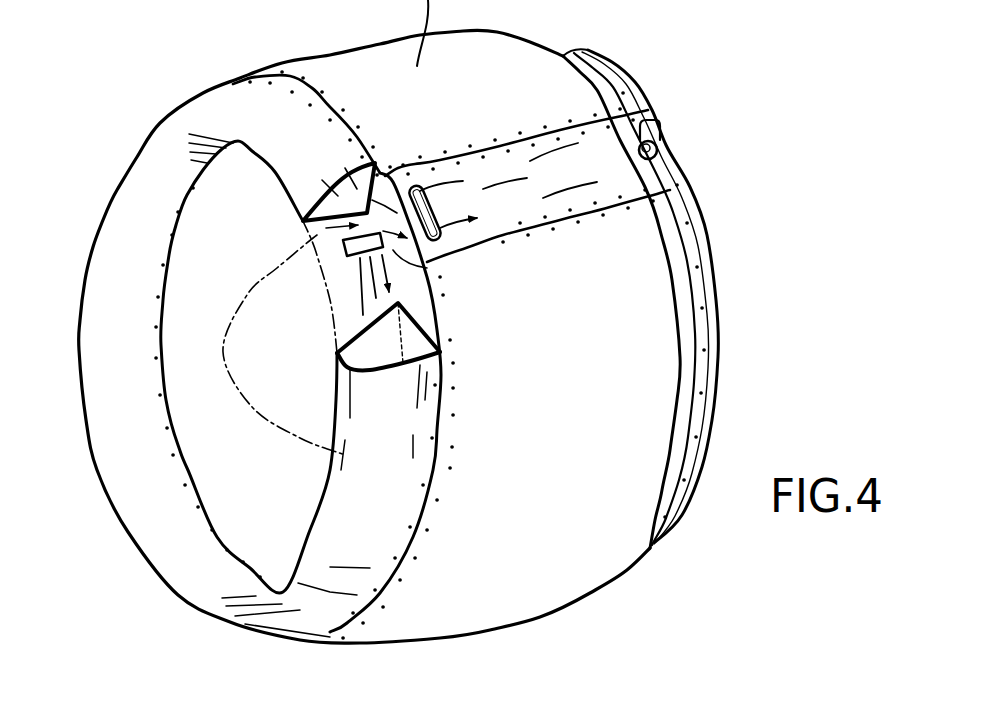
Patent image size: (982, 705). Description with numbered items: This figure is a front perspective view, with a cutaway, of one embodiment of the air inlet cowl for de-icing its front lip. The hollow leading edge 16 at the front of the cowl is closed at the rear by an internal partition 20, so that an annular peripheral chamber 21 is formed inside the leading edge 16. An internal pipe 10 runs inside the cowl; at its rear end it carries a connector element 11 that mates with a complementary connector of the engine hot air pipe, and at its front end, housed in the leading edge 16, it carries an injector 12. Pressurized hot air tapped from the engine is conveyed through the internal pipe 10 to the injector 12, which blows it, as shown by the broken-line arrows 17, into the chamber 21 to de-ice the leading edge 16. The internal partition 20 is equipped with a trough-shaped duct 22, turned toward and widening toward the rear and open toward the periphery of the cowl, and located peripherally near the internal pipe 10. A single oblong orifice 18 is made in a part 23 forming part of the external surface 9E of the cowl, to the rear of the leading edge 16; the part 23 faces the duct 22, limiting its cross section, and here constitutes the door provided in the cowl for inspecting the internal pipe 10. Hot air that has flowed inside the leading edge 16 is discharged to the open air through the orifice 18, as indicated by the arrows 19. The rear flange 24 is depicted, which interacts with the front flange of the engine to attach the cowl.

The external surface 9E is at (285, 60).
The hollow leading edge 16 is at (111, 213).
The injector 12 is at (302, 223).
The broken-line arrows 17 is at (360, 262).
The single oblong orifice 18 is at (420, 184).
The arrows 19 is at (542, 157).
The internal partition 20 is at (412, 288).
The annular peripheral chamber 21 is at (387, 354).
The trough-shaped duct 22 is at (400, 256).
The part 23 is at (600, 178).
The internal pipe 10 is at (636, 128).
The connector element 11 is at (660, 150).
The flange 24 is at (709, 341).